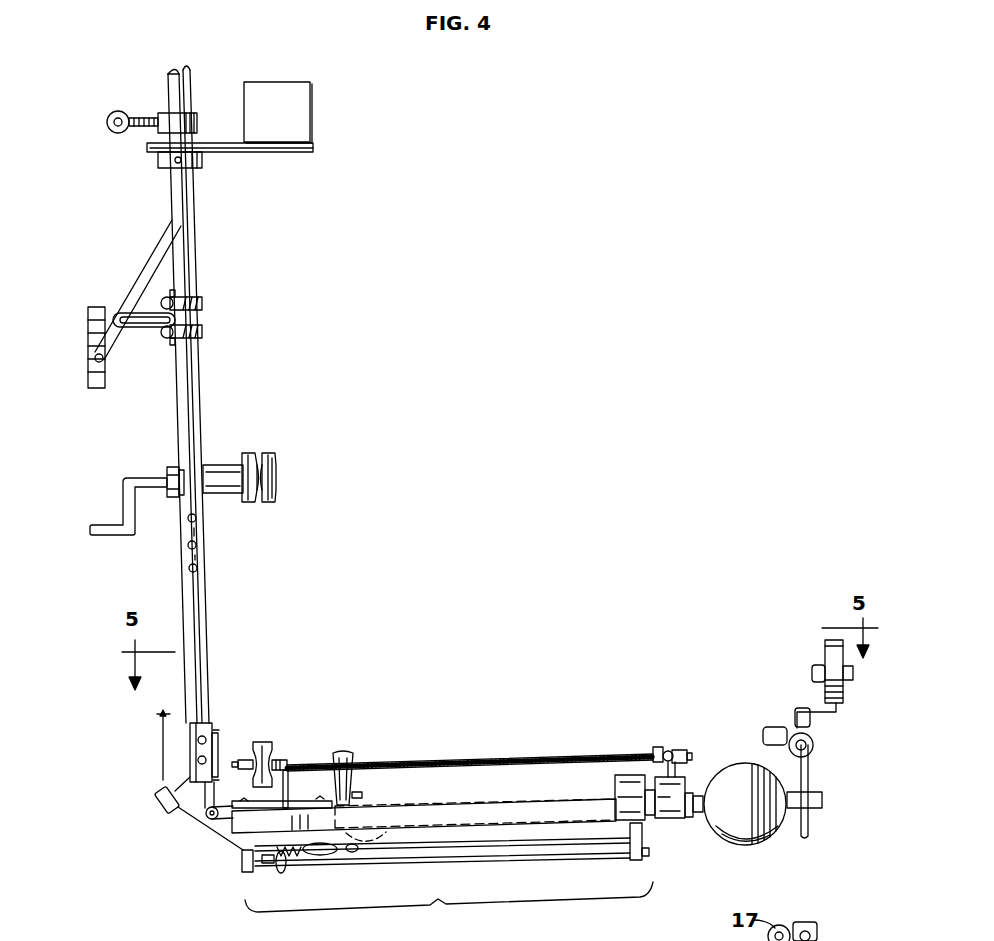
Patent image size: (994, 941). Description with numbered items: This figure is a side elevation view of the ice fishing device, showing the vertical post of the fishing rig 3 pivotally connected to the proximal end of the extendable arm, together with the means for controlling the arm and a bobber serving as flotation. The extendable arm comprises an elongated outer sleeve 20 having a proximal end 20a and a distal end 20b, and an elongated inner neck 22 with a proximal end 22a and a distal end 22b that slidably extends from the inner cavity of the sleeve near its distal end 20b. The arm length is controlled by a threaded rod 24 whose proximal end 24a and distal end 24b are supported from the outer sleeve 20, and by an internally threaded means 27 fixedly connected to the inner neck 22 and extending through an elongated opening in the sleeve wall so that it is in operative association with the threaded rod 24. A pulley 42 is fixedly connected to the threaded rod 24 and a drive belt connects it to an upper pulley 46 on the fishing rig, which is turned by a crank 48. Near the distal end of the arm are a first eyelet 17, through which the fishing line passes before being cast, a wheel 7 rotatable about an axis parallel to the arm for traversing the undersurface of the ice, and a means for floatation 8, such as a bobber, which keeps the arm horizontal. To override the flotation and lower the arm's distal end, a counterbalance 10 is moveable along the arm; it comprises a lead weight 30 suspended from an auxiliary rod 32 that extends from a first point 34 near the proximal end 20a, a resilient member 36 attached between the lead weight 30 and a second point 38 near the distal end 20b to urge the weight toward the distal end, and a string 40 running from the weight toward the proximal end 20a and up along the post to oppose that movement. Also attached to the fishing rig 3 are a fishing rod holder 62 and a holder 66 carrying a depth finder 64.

The fishing rig 3 is at (246, 376).
The wheel 7 is at (822, 640).
The means for floatation 8 is at (740, 845).
The counterbalance 10 is at (449, 908).
The first eyelet 17 is at (774, 730).
The elongated outer sleeve 20 is at (544, 806).
The proximal end of outer sleeve 20a is at (237, 838).
The distal end of outer sleeve 20b is at (692, 792).
The elongated inner neck 22 is at (463, 808).
The proximal end of inner neck 22a is at (388, 832).
The distal end of inner neck 22b is at (822, 801).
The threaded rod 24 is at (552, 752).
The proximal end of threaded rod 24a is at (240, 762).
The distal end of threaded rod 24b is at (688, 752).
The internally threaded means 27 is at (356, 752).
The lead weight 30 is at (336, 860).
The auxiliary rod 32 is at (530, 857).
The first point 34 is at (263, 862).
The resilient member 36 is at (592, 843).
The second point 38 is at (638, 825).
The string 40 is at (186, 818).
The pulley 42 is at (272, 745).
The upper pulley 46 is at (272, 453).
The crank 48 is at (120, 535).
The fishing rod holder 62 is at (88, 320).
The depth finder 64 is at (281, 82).
The holder 66 is at (228, 140).